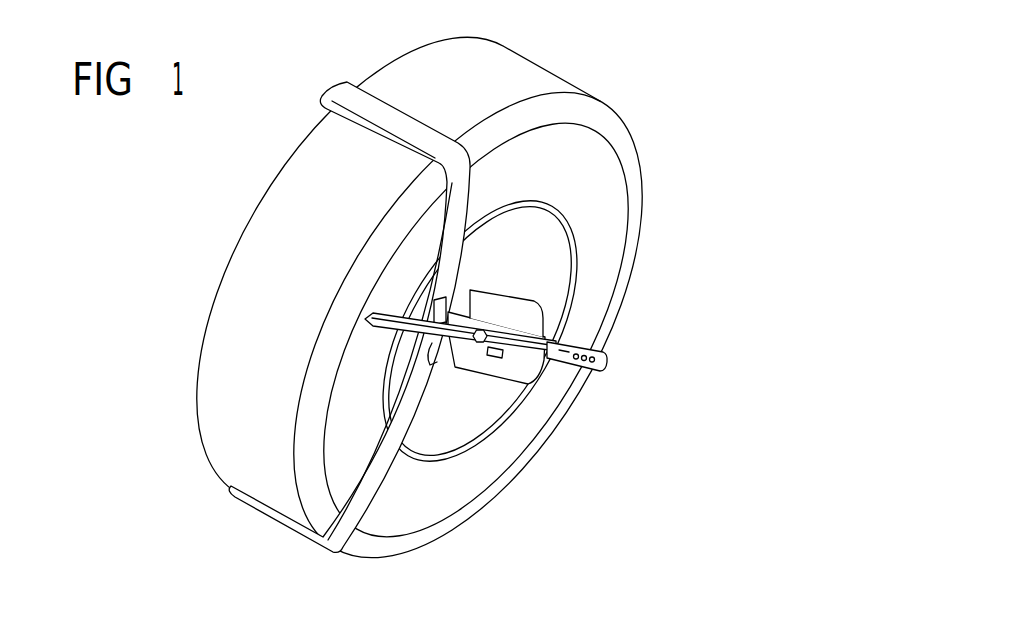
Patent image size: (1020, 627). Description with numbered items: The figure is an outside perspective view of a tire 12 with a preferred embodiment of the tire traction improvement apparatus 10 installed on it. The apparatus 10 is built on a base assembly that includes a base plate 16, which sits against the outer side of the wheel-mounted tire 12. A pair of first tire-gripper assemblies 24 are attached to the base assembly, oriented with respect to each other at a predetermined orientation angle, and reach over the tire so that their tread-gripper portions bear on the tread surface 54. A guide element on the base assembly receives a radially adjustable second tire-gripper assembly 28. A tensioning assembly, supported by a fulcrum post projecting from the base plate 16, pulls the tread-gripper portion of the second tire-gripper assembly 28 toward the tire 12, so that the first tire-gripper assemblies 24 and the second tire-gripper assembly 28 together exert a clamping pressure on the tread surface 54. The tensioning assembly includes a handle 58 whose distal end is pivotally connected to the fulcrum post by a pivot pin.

The tire traction improvement apparatus 10 is at (525, 494).
The tire 12 is at (198, 300).
The tread surface 54 is at (300, 225).
The first tire-gripper assemblies 24 is at (325, 80).
The base plate 16 is at (517, 313).
The handle 58 is at (380, 330).
The second tire-gripper assembly 28 is at (626, 366).